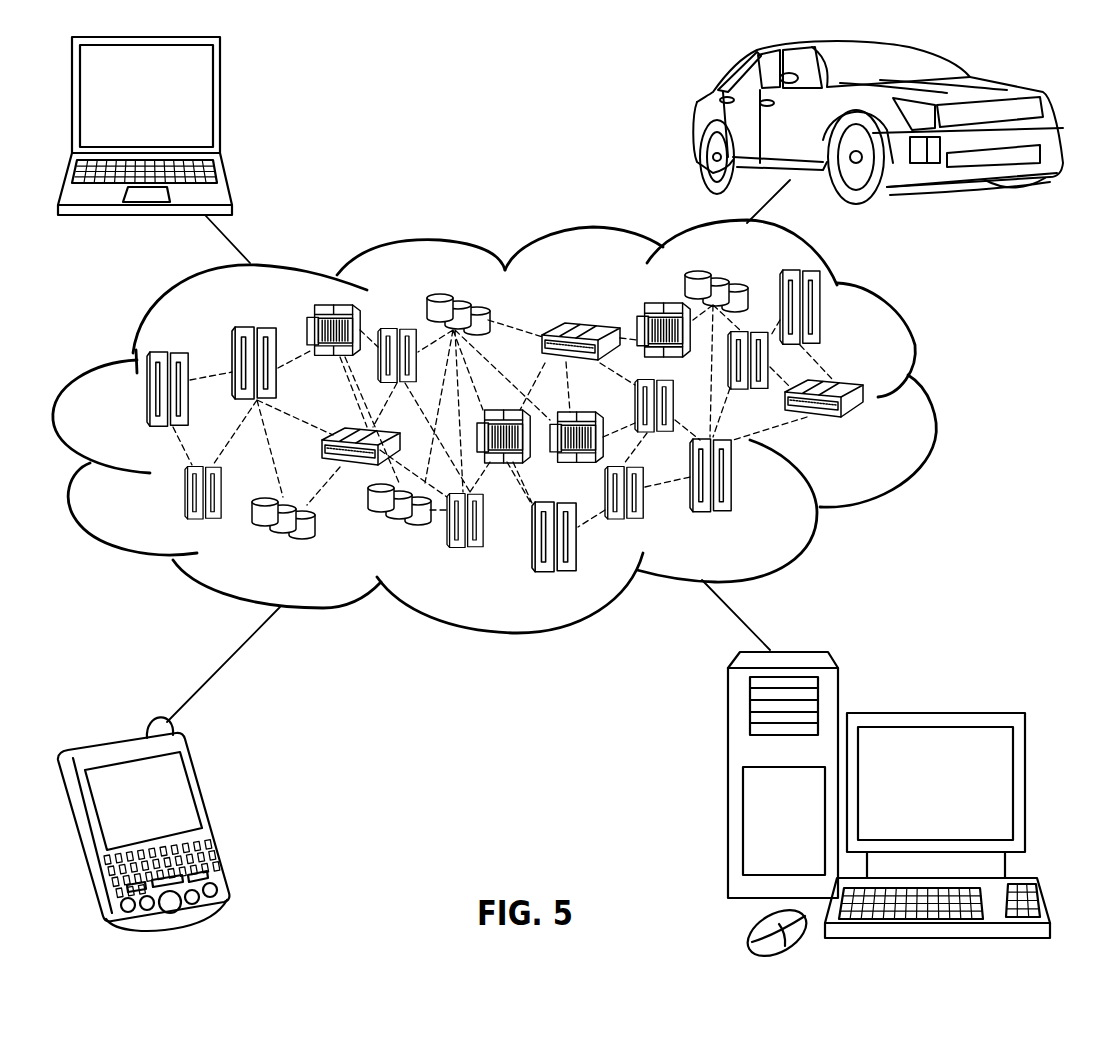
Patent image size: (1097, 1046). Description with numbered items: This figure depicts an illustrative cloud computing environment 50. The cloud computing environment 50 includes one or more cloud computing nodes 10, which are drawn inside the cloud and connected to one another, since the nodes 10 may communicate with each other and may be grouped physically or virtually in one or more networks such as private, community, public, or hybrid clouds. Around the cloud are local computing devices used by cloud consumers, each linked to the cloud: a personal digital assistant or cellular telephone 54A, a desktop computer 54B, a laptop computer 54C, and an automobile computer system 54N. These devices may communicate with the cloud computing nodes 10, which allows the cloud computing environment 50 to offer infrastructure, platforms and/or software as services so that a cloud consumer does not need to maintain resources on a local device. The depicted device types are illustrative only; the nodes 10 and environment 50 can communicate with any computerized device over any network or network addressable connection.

The cloud computing environment 50 is at (930, 399).
The cloud computing nodes 10 is at (872, 432).
The personal digital assistant (PDA) or cellular telephone 54A is at (211, 816).
The desktop computer 54B is at (933, 712).
The laptop computer 54C is at (221, 102).
The automobile computer system 54N is at (696, 124).